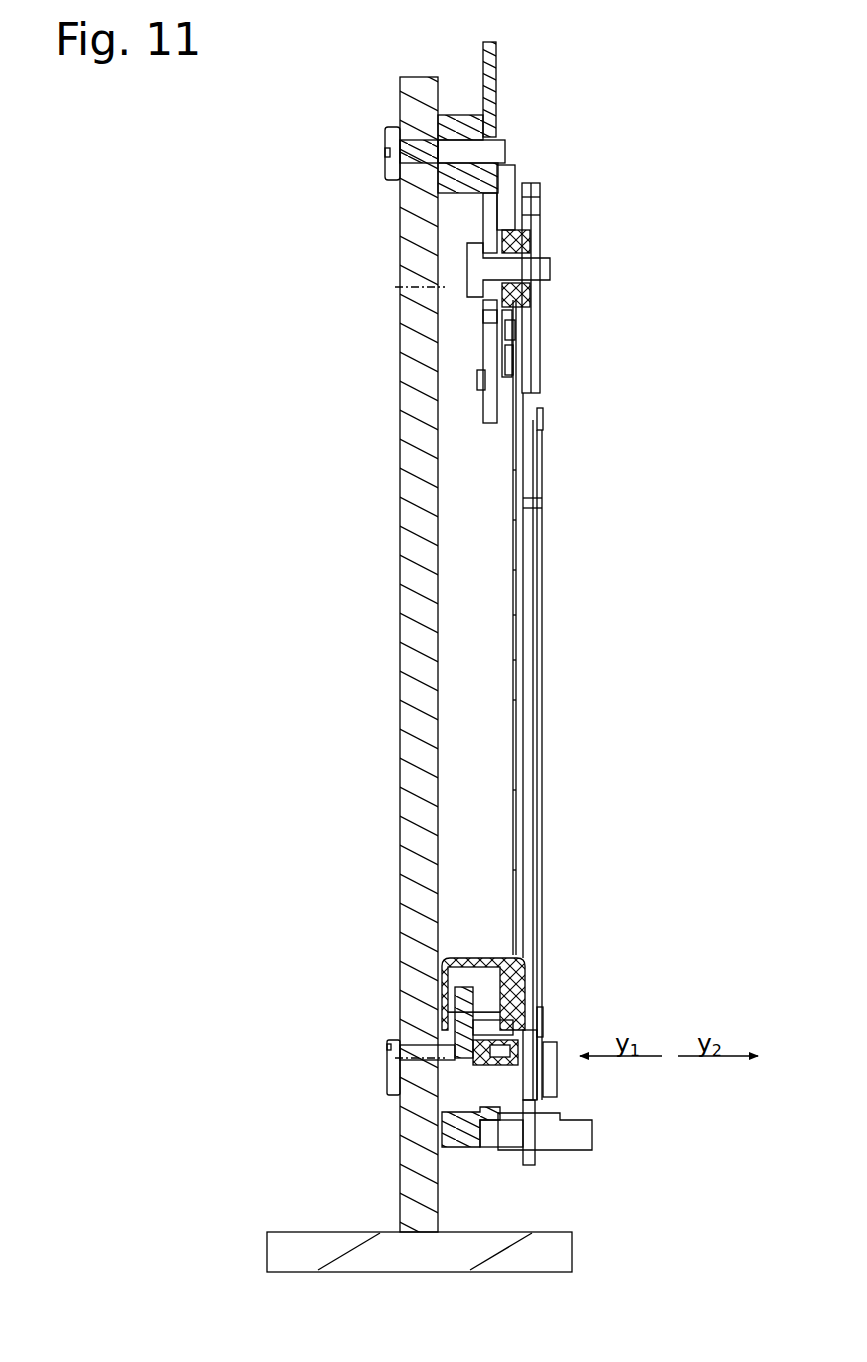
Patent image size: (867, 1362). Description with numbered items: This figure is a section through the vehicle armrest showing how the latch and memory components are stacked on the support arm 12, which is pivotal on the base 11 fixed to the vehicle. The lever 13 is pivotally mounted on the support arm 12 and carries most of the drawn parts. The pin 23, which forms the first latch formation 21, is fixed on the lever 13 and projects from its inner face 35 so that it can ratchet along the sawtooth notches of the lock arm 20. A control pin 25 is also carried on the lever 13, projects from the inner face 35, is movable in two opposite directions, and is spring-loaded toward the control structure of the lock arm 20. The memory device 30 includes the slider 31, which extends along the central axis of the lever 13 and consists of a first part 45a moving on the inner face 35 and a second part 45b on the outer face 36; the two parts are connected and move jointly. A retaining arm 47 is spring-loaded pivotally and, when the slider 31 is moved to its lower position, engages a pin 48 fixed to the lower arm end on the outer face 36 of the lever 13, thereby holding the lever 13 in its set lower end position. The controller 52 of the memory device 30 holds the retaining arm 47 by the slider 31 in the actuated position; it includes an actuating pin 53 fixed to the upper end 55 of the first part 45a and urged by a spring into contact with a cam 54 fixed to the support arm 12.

The base 11 is at (410, 610).
The support arm 12 is at (490, 400).
The lever 13 is at (523, 575).
The lock arm 20 is at (462, 1025).
The first latch formation 21 is at (455, 1140).
The pin 23 is at (480, 1132).
The control pin 25 is at (530, 1008).
The memory device 30 is at (560, 1103).
The slider 31 is at (540, 785).
The inner face 35 is at (518, 950).
The outer face 36 is at (557, 420).
The first part 45a is at (518, 632).
The second part 45b is at (542, 708).
The retaining arm 47 is at (543, 1037).
The pin 48 is at (548, 1125).
The controller 52 is at (483, 337).
The actuating pin 53 is at (520, 333).
The cam 54 is at (487, 308).
The upper end 55 is at (533, 317).